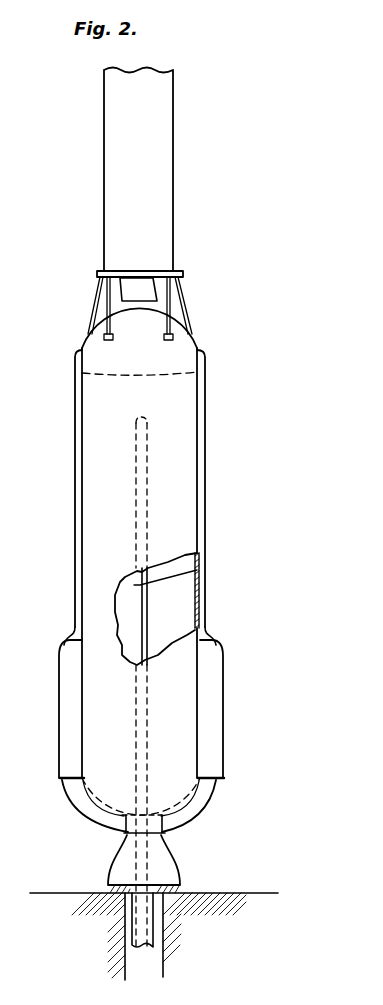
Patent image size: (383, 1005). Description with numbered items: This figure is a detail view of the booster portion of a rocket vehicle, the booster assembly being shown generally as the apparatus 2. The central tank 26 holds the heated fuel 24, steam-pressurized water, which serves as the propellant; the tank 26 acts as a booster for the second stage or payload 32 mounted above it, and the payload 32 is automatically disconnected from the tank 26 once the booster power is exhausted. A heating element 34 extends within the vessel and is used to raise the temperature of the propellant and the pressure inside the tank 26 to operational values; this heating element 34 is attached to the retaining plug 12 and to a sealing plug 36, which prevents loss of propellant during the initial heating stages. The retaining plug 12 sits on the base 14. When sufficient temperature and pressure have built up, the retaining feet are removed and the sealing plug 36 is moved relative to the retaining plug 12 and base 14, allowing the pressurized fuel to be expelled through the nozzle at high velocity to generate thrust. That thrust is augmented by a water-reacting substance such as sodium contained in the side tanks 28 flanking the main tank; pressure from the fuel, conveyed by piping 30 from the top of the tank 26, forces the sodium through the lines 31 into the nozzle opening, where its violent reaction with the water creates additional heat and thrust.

The apparatus 2 is at (195, 608).
The retaining plug 12 is at (181, 891).
The base 14 is at (236, 893).
The heated fuel 24 is at (177, 597).
The tank 26 is at (84, 341).
The side tanks 28 is at (62, 712).
The piping 30 is at (75, 420).
The lines 31 is at (203, 805).
The second stage or payload 32 is at (174, 158).
The heating element 34 is at (200, 566).
The sealing plug 36 is at (166, 834).